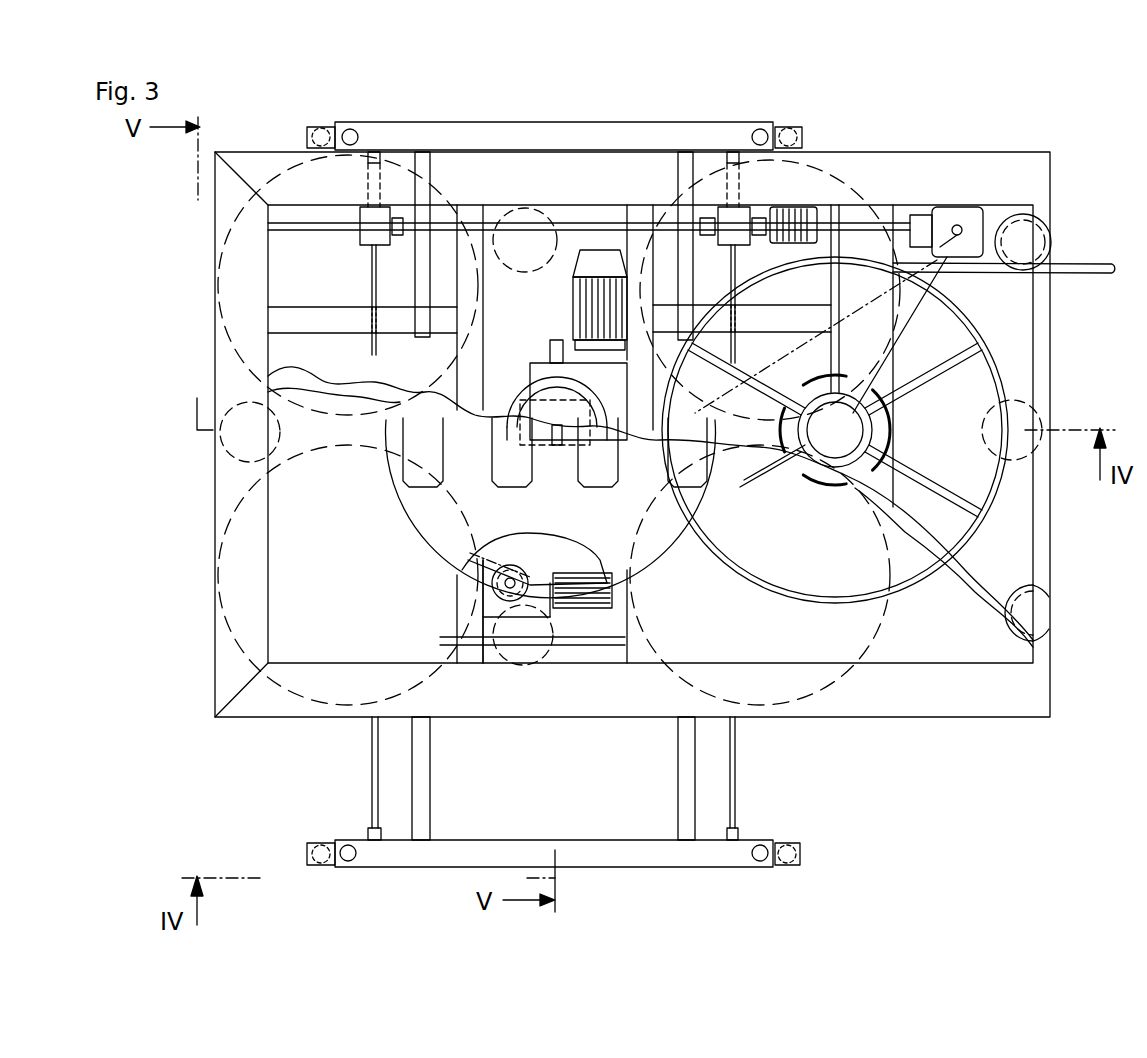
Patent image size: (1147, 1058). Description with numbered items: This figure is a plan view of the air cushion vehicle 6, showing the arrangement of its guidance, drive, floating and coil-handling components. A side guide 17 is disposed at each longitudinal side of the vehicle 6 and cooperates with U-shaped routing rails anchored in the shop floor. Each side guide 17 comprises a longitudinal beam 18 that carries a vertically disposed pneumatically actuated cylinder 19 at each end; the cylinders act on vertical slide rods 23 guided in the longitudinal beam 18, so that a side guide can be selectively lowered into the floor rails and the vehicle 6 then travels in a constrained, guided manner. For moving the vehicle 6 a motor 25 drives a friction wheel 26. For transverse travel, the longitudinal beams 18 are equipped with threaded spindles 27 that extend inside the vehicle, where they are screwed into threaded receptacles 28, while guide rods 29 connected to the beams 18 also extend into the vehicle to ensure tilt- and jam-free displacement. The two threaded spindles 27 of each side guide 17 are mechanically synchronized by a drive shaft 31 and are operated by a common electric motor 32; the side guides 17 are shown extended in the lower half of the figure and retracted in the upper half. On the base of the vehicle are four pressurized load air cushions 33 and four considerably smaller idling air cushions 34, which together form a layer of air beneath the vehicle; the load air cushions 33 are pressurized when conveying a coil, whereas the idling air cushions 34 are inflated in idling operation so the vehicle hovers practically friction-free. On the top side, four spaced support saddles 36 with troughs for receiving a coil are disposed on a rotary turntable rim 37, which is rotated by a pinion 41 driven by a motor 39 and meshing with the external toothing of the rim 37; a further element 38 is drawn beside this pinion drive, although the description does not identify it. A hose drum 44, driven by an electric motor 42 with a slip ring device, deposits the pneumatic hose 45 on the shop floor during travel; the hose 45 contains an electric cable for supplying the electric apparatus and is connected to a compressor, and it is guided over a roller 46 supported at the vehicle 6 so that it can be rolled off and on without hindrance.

The air cushion vehicle 6 is at (940, 638).
The side guide 17 is at (385, 112).
The longitudinal beam 18 is at (585, 132).
The pneumatically actuated cylinder 19 is at (312, 130).
The vertical slide rod 23 is at (760, 130).
The motor 25 is at (590, 312).
The friction wheel 26 is at (540, 422).
The threaded spindle 27 is at (372, 280).
The threaded receptacle 28 is at (372, 338).
The guide rod 29 is at (422, 337).
The drive shaft 31 is at (575, 224).
The electric motor 32 is at (790, 206).
The load air cushion 33 is at (838, 190).
The idling air cushion 34 is at (518, 214).
The support saddle 36 is at (430, 490).
The rotary turntable rim 37 is at (588, 526).
The wheel 38 is at (492, 565).
The motor 39 is at (594, 610).
The pinion 41 is at (498, 592).
The electric motor 42 is at (950, 212).
The hose drum 44 is at (995, 505).
The pneumatic hose 45 is at (1080, 272).
The roller 46 is at (1030, 240).